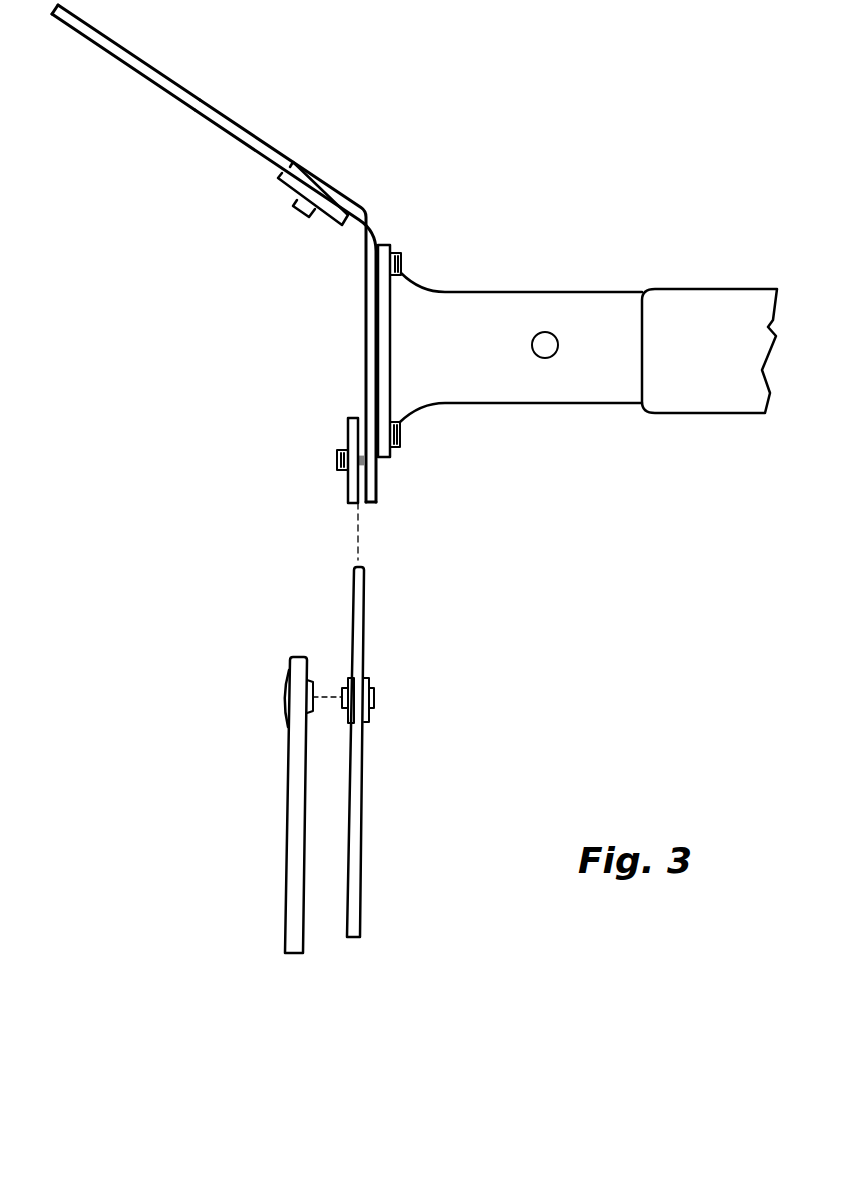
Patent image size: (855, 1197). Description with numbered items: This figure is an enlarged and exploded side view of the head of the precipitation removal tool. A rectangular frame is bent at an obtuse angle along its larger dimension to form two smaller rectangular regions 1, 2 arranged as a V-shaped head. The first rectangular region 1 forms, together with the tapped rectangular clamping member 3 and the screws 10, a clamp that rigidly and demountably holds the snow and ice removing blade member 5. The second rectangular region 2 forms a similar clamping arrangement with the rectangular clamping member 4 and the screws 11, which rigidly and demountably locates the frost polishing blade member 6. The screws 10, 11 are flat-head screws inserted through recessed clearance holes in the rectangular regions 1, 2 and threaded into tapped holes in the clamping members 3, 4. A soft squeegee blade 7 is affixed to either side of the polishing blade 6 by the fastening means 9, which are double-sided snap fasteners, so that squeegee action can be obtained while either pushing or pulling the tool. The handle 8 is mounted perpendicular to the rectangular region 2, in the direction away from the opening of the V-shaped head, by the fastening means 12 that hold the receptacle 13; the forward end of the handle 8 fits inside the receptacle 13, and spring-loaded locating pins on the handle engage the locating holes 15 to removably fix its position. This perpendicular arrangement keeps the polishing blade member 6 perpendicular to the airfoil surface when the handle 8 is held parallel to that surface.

The rectangular region 1 is at (333, 183).
The rectangular region 2 is at (367, 245).
The tapped rectangular clamping member 3 is at (282, 188).
The rectangular clamping member 4 is at (348, 432).
The snow and ice removing blade member 5 is at (197, 103).
The frost polishing blade member 6 is at (363, 752).
The squeegee blade 7 is at (287, 770).
The handle 8 is at (700, 300).
The fastening means 9 is at (313, 695).
The screws 10 is at (300, 215).
The screws 11 is at (337, 458).
The fastening means 12 is at (400, 435).
The receptacle 13 is at (526, 312).
The locating holes 15 is at (545, 358).